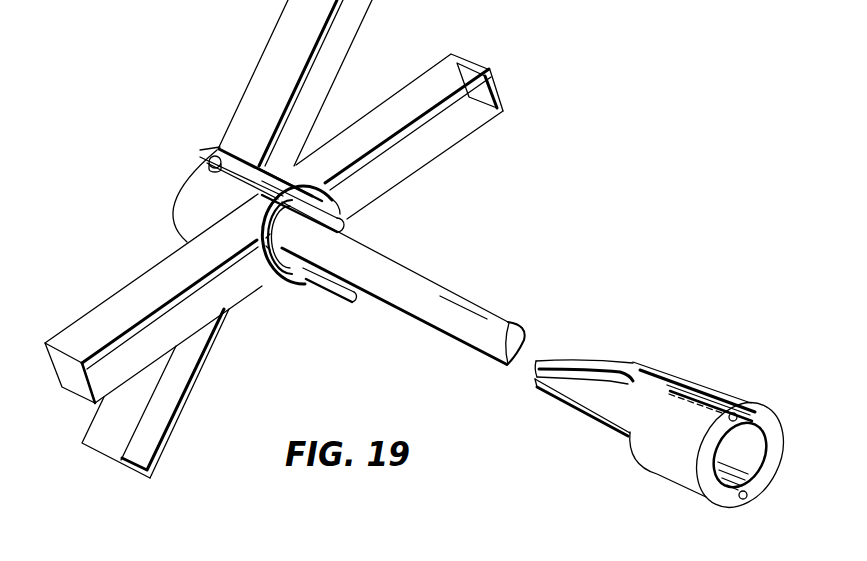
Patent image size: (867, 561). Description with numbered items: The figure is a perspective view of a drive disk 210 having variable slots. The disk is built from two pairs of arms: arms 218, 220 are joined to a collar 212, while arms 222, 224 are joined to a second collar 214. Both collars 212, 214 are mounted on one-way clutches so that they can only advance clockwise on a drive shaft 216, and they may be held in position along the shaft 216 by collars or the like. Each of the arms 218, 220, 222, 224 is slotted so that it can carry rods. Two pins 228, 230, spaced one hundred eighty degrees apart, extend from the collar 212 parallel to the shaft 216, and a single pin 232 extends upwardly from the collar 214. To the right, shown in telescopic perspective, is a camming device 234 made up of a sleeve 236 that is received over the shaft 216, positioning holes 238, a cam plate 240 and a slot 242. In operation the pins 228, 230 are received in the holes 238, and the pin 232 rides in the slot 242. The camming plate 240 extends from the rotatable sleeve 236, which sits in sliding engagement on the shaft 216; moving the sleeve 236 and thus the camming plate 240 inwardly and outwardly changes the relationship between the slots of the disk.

The drive disk 210 is at (146, 129).
The collar 212 is at (287, 278).
The collar 214 is at (183, 219).
The drive shaft 216 is at (426, 276).
The arm 218 is at (85, 322).
The arm 220 is at (392, 100).
The arm 222 is at (182, 406).
The arm 224 is at (264, 68).
The pin 228 is at (335, 290).
The pin 230 is at (350, 208).
The pin 232 is at (212, 156).
The camming device 234 is at (619, 453).
The sleeve 236 is at (715, 442).
The positioning holes 238 is at (739, 412).
The cam plate 240 is at (588, 413).
The slot 242 is at (612, 366).